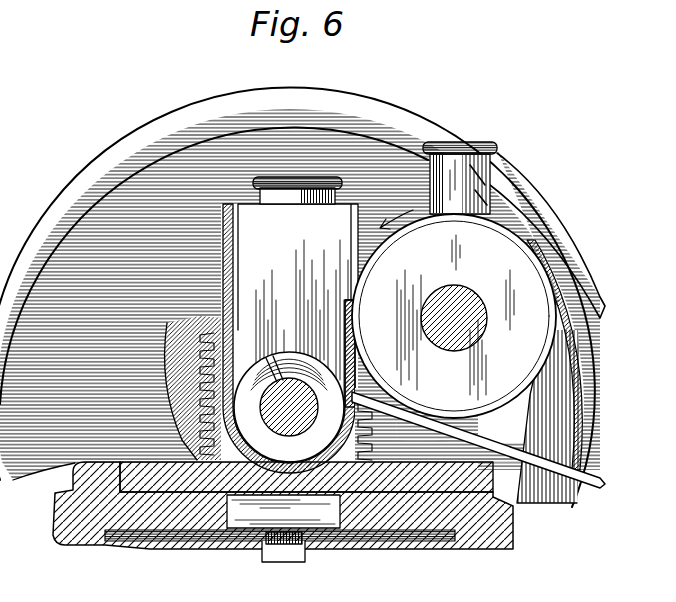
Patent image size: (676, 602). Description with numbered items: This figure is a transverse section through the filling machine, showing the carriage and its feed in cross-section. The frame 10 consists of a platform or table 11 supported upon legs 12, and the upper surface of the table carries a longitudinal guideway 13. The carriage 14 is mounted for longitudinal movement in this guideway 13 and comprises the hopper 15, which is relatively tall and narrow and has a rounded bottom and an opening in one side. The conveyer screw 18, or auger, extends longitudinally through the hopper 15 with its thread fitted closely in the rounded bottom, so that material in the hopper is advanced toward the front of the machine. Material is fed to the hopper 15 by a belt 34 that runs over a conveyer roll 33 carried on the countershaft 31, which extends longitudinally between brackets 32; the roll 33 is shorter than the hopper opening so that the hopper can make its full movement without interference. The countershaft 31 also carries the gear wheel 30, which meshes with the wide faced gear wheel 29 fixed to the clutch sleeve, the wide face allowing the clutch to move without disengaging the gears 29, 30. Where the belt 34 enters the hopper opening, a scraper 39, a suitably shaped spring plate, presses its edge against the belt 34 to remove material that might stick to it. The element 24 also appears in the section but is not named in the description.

The frame 10 is at (513, 547).
The platform or table 11 is at (425, 528).
The legs 12 is at (351, 233).
The guideway 13 is at (132, 462).
The carriage 14 is at (444, 425).
The hopper 15 is at (228, 299).
The conveyer screw 18 is at (286, 381).
The dome cover 24 is at (392, 124).
The wide faced gear wheel 29 is at (193, 417).
The gear wheel 30 is at (307, 555).
The countershaft 31 is at (478, 320).
The brackets 32 is at (557, 427).
The conveyer roll 33 is at (530, 357).
The belt 34 is at (547, 253).
The scraper 39 is at (345, 330).